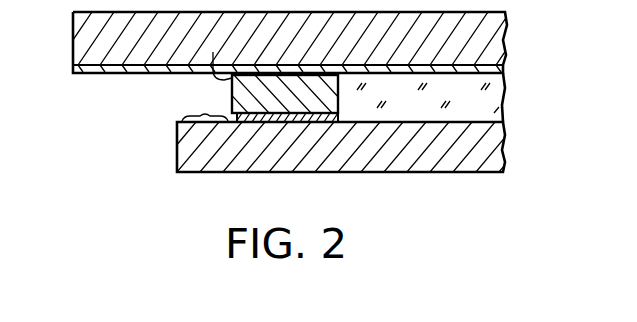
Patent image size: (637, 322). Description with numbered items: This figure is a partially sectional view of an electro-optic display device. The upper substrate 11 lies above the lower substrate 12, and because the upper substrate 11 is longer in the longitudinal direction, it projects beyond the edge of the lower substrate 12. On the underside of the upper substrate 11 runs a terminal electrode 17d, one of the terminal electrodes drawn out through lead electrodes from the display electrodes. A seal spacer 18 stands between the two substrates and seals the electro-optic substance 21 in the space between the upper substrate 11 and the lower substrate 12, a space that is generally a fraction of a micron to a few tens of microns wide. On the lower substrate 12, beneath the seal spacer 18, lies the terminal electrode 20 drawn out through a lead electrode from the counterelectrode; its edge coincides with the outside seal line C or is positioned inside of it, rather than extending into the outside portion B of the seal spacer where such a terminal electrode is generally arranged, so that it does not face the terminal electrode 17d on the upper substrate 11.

The upper substrate 11 is at (490, 33).
The lower substrate 12 is at (455, 158).
The terminal electrode 17d is at (97, 76).
The seal spacer 18 is at (312, 72).
The terminal electrode 20 is at (258, 123).
The electro-optic substance 21 is at (490, 90).
The outside portion of the seal spacer B is at (205, 102).
The outside seal line C is at (219, 54).